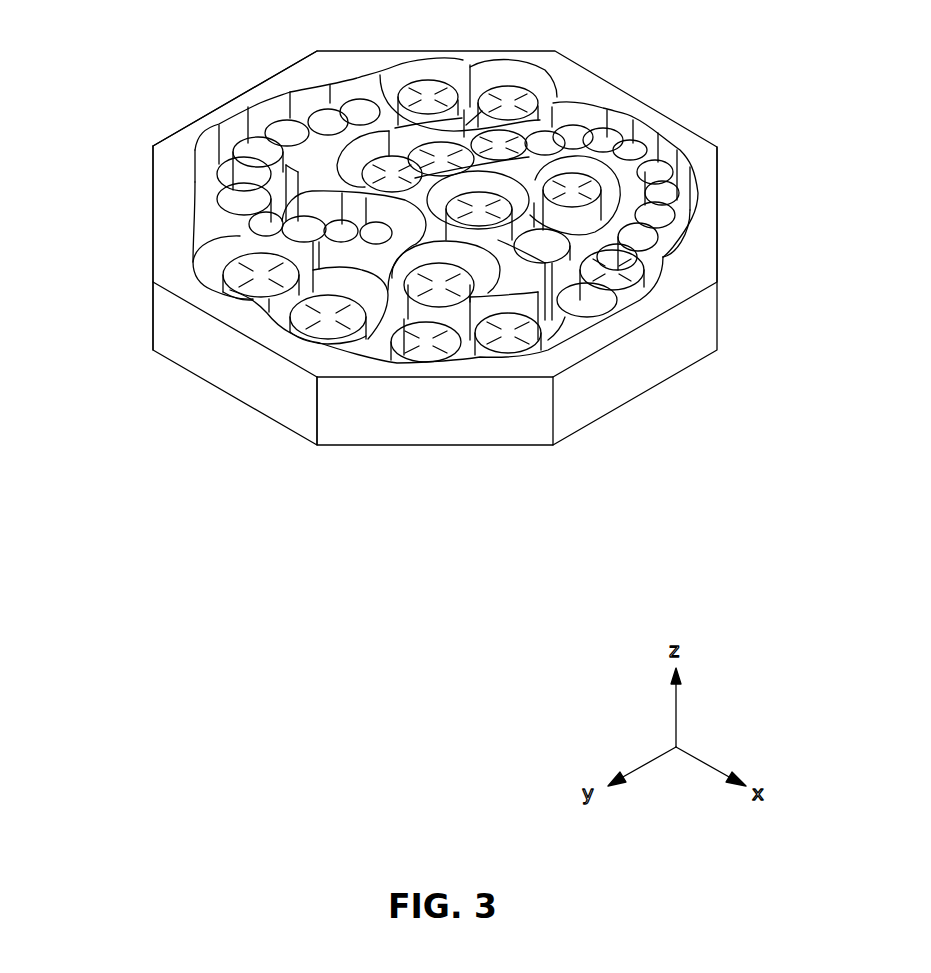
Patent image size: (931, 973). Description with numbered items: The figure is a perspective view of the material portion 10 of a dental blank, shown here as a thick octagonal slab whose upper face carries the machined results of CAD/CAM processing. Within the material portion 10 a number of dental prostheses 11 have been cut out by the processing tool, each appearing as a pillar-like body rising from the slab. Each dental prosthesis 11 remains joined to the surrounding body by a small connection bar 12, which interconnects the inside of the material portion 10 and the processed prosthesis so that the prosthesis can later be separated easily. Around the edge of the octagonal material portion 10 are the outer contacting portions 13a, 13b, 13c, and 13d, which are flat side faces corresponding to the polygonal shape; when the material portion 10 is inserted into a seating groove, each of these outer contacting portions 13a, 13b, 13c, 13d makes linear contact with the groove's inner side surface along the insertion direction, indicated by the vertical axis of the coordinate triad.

The material portion 10 is at (437, 253).
The dental prosthesis 11 is at (260, 272).
The connection bar 12 is at (240, 145).
The outer contacting portion 13a is at (153, 282).
The outer contacting portion 13b is at (317, 377).
The outer contacting portion 13c is at (553, 377).
The outer contacting portion 13d is at (717, 282).